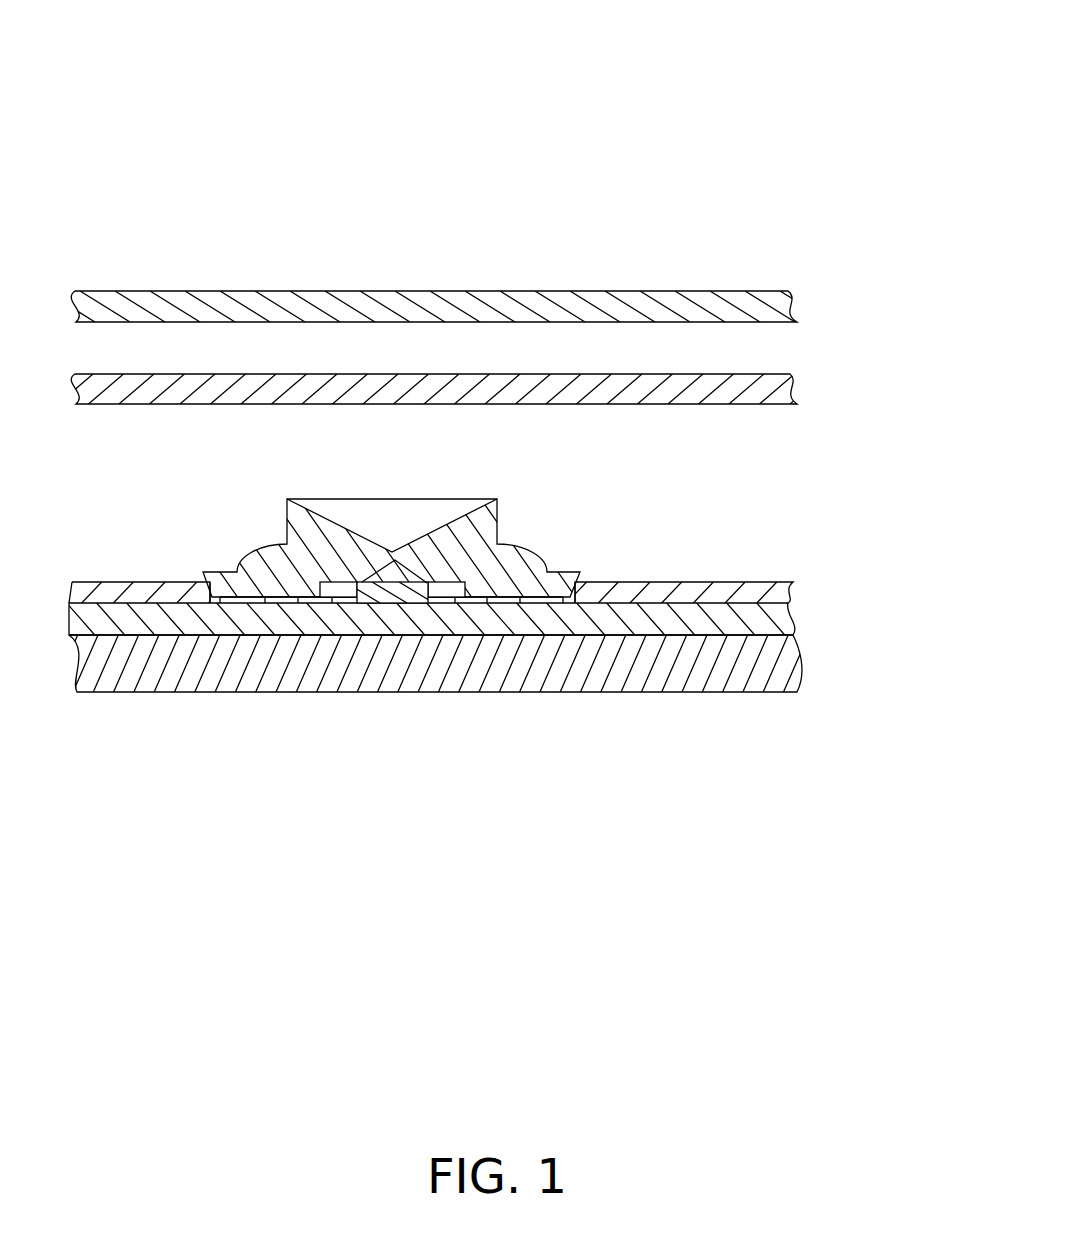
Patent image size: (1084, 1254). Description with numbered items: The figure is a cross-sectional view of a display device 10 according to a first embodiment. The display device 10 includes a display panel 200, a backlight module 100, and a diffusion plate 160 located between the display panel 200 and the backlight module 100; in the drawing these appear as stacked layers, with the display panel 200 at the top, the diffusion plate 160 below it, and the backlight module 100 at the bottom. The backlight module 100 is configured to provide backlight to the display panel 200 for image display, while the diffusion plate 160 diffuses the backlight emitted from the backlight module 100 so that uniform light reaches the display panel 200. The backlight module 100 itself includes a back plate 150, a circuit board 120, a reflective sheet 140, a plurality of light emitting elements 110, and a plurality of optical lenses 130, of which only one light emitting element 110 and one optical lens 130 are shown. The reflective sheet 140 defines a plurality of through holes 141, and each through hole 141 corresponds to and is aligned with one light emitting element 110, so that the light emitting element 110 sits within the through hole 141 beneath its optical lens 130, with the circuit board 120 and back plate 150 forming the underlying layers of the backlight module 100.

The display device 10 is at (311, 56).
The backlight module 100 is at (856, 550).
The light emitting element 110 is at (402, 593).
The circuit board 120 is at (778, 627).
The optical lens 130 is at (265, 548).
The reflective sheet 140 is at (779, 596).
The through hole 141 is at (545, 598).
The back plate 150 is at (795, 668).
The diffusion plate 160 is at (794, 381).
The display panel 200 is at (794, 298).